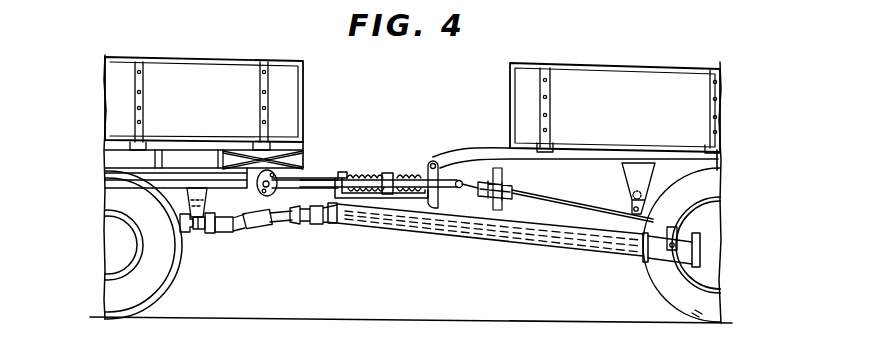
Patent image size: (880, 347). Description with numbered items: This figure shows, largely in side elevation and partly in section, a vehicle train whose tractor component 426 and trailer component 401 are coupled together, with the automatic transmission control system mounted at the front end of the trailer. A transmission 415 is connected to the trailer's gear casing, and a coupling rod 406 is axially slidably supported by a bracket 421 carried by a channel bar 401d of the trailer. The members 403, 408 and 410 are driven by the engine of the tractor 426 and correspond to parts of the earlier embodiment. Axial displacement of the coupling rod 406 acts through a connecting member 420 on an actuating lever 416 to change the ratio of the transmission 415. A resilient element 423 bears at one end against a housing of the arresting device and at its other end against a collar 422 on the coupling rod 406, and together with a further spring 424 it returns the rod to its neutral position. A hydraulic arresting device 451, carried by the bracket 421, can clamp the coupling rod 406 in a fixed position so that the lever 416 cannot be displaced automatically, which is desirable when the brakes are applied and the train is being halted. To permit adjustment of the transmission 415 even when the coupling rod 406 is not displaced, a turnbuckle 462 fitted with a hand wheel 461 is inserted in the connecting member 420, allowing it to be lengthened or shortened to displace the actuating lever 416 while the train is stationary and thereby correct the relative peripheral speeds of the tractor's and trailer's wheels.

The trailer component 401 is at (667, 38).
The channel bar 401d is at (358, 223).
The driving member 403 is at (670, 292).
The coupling rod 406 is at (312, 182).
The driving member 408 is at (252, 232).
The driving member 410 is at (518, 236).
The transmission 415 is at (663, 238).
The actuating lever 416 is at (677, 228).
The connecting member 420 is at (590, 192).
The bracket 421 is at (427, 208).
The collar 422 is at (387, 195).
The resilient element 423 is at (372, 171).
The spring 424 is at (433, 160).
The tractor component 426 is at (248, 190).
The hydraulic arresting device 451 is at (351, 163).
The hand wheel 461 is at (501, 174).
The turnbuckle 462 is at (486, 199).